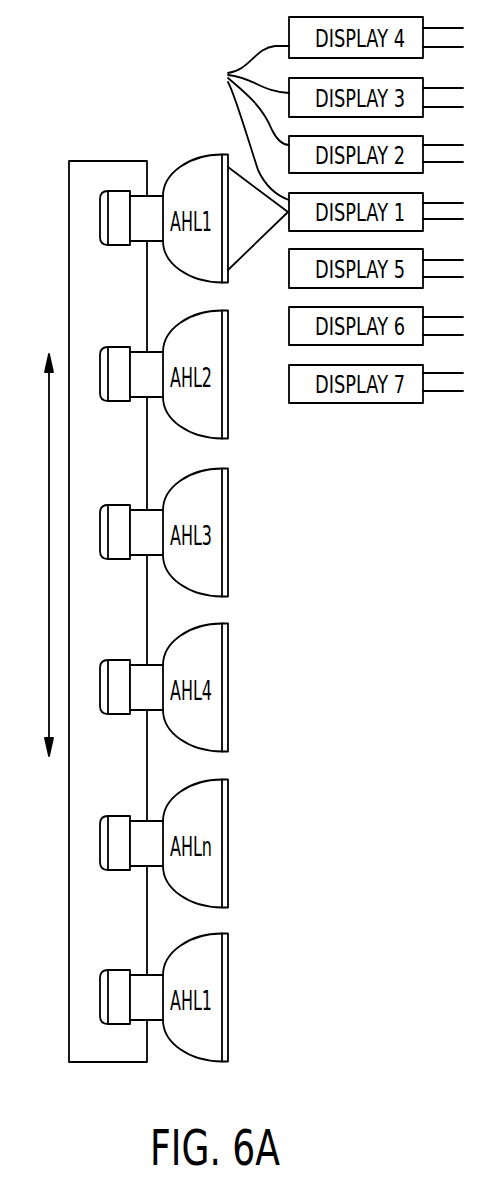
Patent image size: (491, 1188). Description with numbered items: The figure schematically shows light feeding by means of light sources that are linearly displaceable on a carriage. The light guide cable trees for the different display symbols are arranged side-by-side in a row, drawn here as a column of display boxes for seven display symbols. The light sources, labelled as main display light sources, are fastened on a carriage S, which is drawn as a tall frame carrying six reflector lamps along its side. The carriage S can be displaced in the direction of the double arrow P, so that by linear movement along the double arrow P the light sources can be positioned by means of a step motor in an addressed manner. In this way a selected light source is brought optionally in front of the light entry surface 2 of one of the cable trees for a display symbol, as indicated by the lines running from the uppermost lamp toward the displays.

The carriage S is at (94, 168).
The light entry surface 2 is at (251, 123).
The double arrow P is at (49, 513).